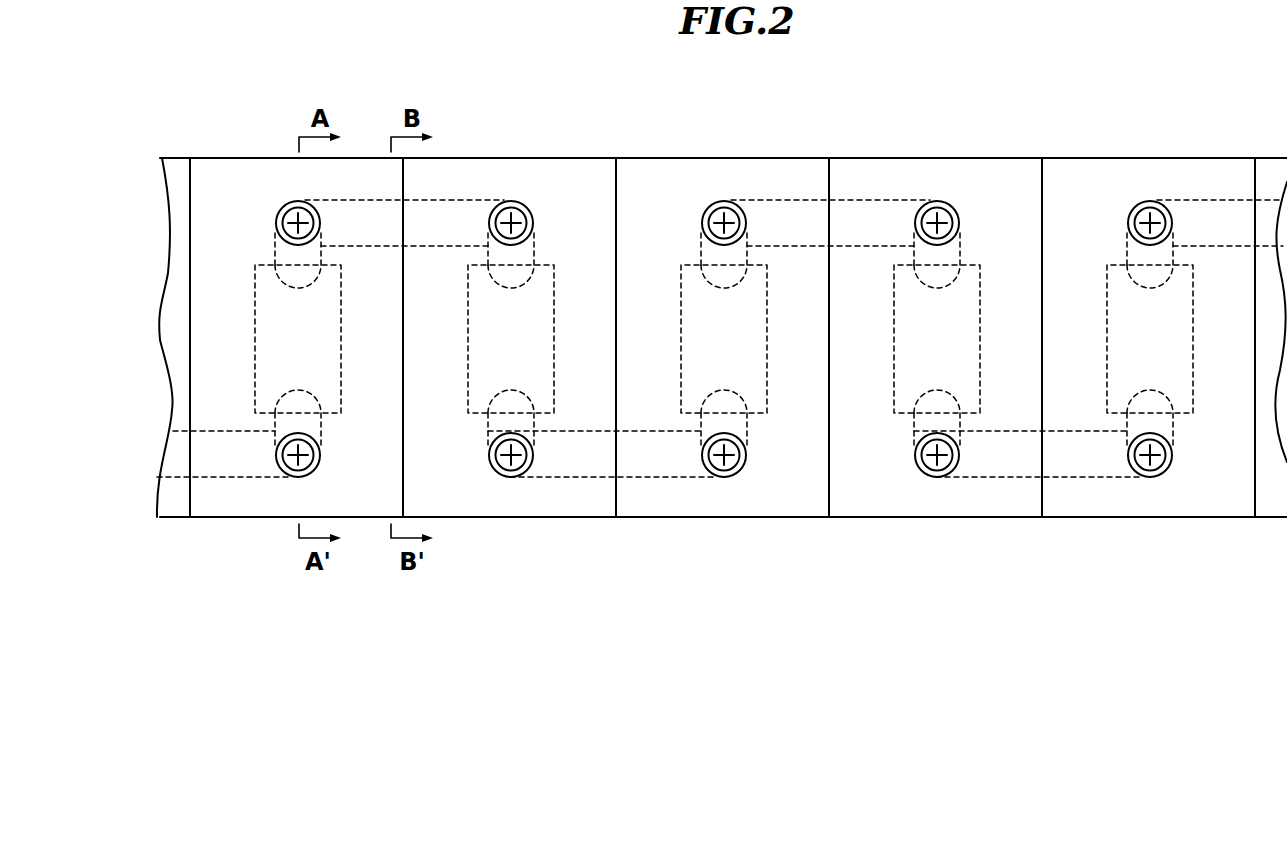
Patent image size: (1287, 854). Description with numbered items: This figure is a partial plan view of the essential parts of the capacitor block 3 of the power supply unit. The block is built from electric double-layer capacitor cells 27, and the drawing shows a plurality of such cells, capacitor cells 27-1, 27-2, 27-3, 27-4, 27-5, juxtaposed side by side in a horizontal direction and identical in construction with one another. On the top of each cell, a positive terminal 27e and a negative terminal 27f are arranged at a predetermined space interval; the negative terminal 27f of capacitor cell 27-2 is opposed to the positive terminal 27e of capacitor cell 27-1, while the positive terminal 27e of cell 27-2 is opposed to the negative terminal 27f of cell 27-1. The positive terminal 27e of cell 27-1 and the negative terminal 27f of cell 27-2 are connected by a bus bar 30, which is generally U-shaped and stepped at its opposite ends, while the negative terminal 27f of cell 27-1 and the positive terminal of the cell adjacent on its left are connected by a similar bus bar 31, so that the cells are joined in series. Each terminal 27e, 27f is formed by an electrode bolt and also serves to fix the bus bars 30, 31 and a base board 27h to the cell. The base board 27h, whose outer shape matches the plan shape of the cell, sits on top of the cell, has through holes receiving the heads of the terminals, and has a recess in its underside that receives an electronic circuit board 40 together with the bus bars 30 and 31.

The capacitor block 3 is at (914, 547).
The electric double-layer capacitor cell 27 is at (356, 500).
The capacitor cell 27-1 is at (348, 142).
The capacitor cell 27-2 is at (506, 142).
The capacitor cell 27-3 is at (720, 142).
The capacitor cell 27-4 is at (933, 142).
The capacitor cell 27-5 is at (1145, 142).
The positive terminal 27e is at (291, 206).
The negative terminal 27f is at (520, 206).
The base board 27h is at (207, 216).
The bus bar 30 is at (463, 200).
The bus bar 31 is at (208, 458).
The electronic circuit board 40 is at (280, 292).